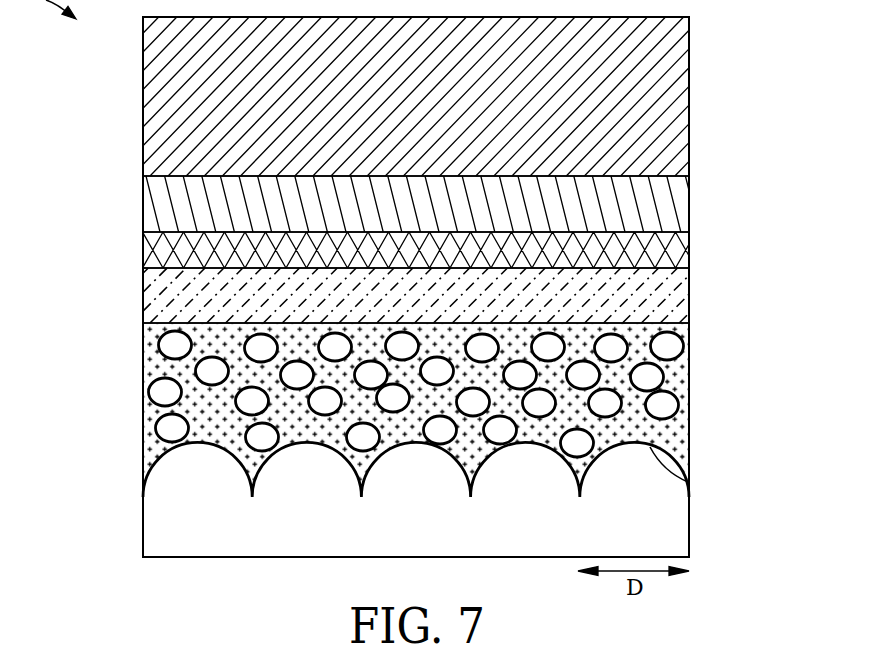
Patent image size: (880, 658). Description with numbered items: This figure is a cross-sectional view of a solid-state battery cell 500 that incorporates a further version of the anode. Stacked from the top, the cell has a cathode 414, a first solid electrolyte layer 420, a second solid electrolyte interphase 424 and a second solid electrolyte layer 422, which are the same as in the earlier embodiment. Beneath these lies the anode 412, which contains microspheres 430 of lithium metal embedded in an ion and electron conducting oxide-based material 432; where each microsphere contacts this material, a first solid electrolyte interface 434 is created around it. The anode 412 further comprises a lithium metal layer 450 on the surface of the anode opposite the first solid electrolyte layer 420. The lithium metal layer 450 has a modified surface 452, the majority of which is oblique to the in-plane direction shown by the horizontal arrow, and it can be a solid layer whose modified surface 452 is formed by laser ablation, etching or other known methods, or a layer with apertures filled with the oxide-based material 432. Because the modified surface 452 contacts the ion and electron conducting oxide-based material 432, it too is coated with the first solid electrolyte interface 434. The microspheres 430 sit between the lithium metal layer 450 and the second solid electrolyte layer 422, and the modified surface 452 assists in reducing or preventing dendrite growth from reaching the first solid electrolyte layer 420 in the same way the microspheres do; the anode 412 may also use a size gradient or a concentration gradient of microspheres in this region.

The display device 500 is at (40, 329).
The cathode 414 is at (689, 101).
The first solid electrolyte layer 420 is at (689, 203).
The second solid electrolyte interphase 424 is at (689, 251).
The second solid electrolyte layer 422 is at (689, 300).
The anode 412 is at (415, 413).
The microspheres 430 is at (663, 345).
The ion and electron conducting oxide-based material 432 is at (178, 372).
The first solid electrolyte interface 434 is at (178, 447).
The lithium metal layer 450 is at (665, 529).
The modified surface 452 is at (689, 484).